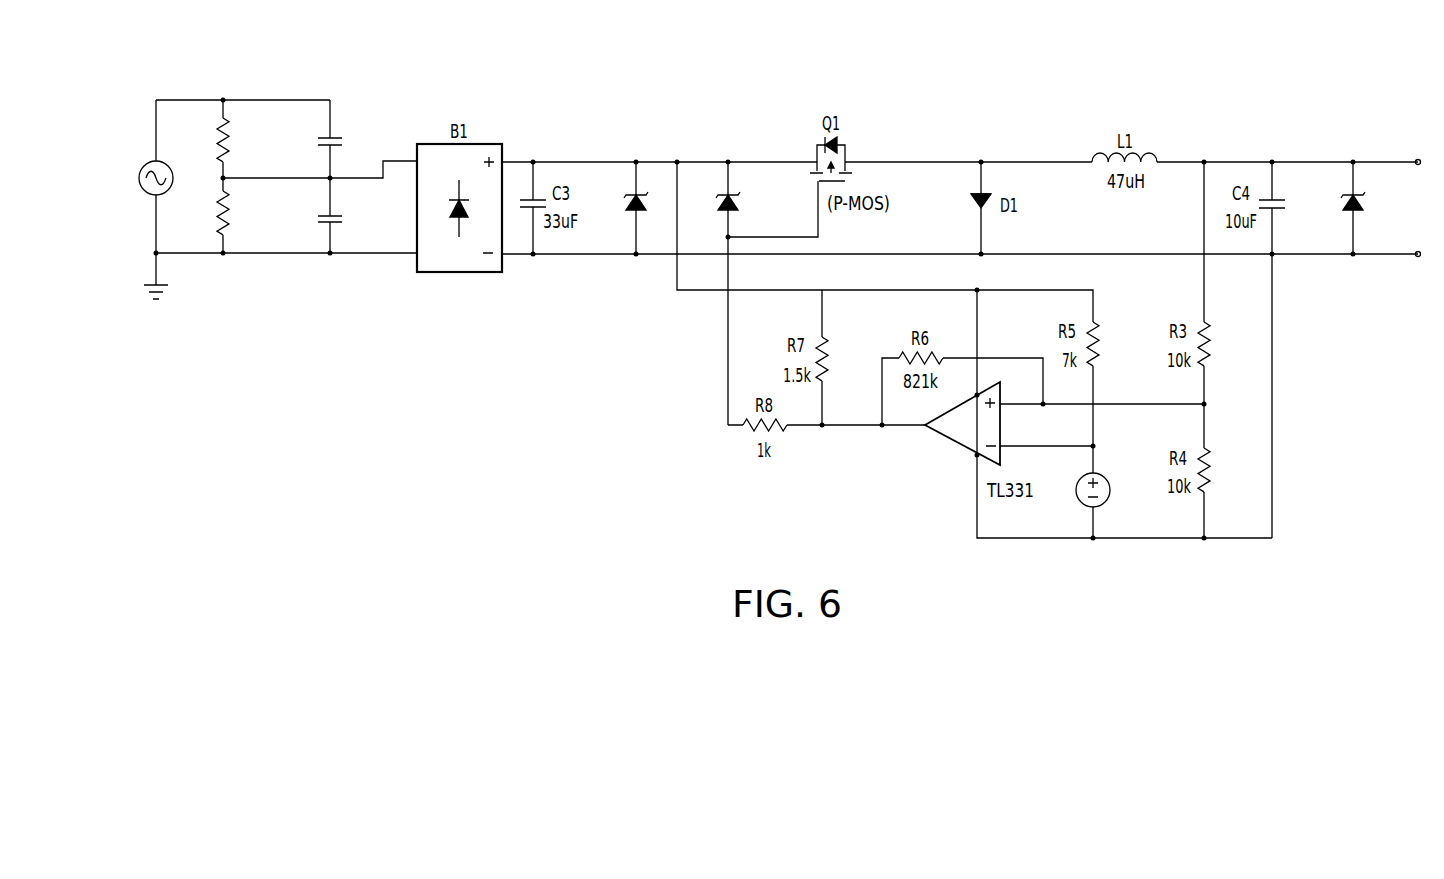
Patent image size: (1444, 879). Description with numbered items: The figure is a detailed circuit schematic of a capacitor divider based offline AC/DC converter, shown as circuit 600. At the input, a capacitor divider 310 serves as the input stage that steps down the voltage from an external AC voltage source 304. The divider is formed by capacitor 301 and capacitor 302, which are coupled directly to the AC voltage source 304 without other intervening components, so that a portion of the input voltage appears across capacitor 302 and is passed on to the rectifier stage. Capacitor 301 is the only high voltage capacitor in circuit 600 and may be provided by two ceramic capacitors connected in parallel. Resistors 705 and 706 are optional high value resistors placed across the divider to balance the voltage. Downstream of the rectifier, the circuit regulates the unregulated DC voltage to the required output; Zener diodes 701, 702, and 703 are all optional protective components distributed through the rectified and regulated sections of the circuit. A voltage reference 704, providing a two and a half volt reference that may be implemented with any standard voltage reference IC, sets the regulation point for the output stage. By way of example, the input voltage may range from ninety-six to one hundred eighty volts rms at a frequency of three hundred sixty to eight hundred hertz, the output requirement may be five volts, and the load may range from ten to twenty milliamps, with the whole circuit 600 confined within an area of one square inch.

The circuit 600 is at (1096, 83).
The AC voltage source 304 is at (142, 167).
The capacitor divider 310 is at (286, 212).
The resistor 705 is at (221, 113).
The resistor 706 is at (223, 237).
The capacitor 301 is at (343, 140).
The capacitor 302 is at (345, 217).
The Zener diode 701 is at (645, 190).
The Zener diode 702 is at (737, 190).
The Zener diode 703 is at (1360, 200).
The voltage reference Vref 704 is at (1080, 503).